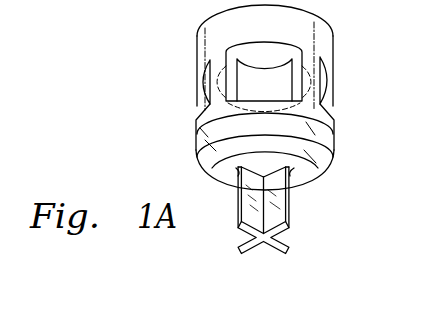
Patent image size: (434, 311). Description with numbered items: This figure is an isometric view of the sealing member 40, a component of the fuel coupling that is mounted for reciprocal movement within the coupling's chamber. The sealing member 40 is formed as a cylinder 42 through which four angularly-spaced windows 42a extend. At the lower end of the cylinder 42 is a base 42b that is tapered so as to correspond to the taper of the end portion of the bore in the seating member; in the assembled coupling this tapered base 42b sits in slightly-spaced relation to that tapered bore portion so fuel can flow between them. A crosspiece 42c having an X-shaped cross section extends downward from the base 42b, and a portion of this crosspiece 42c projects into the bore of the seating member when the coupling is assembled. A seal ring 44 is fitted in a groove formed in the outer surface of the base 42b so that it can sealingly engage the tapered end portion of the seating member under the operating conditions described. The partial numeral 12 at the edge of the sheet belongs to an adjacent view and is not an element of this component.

The sealing member 40 is at (178, 108).
The cylinder 42 is at (198, 53).
The windows 42a is at (321, 91).
The base 42b is at (317, 173).
The crosspiece 42c is at (287, 217).
The seal ring 44 is at (204, 151).
The adjacent component 12 is at (429, 42).